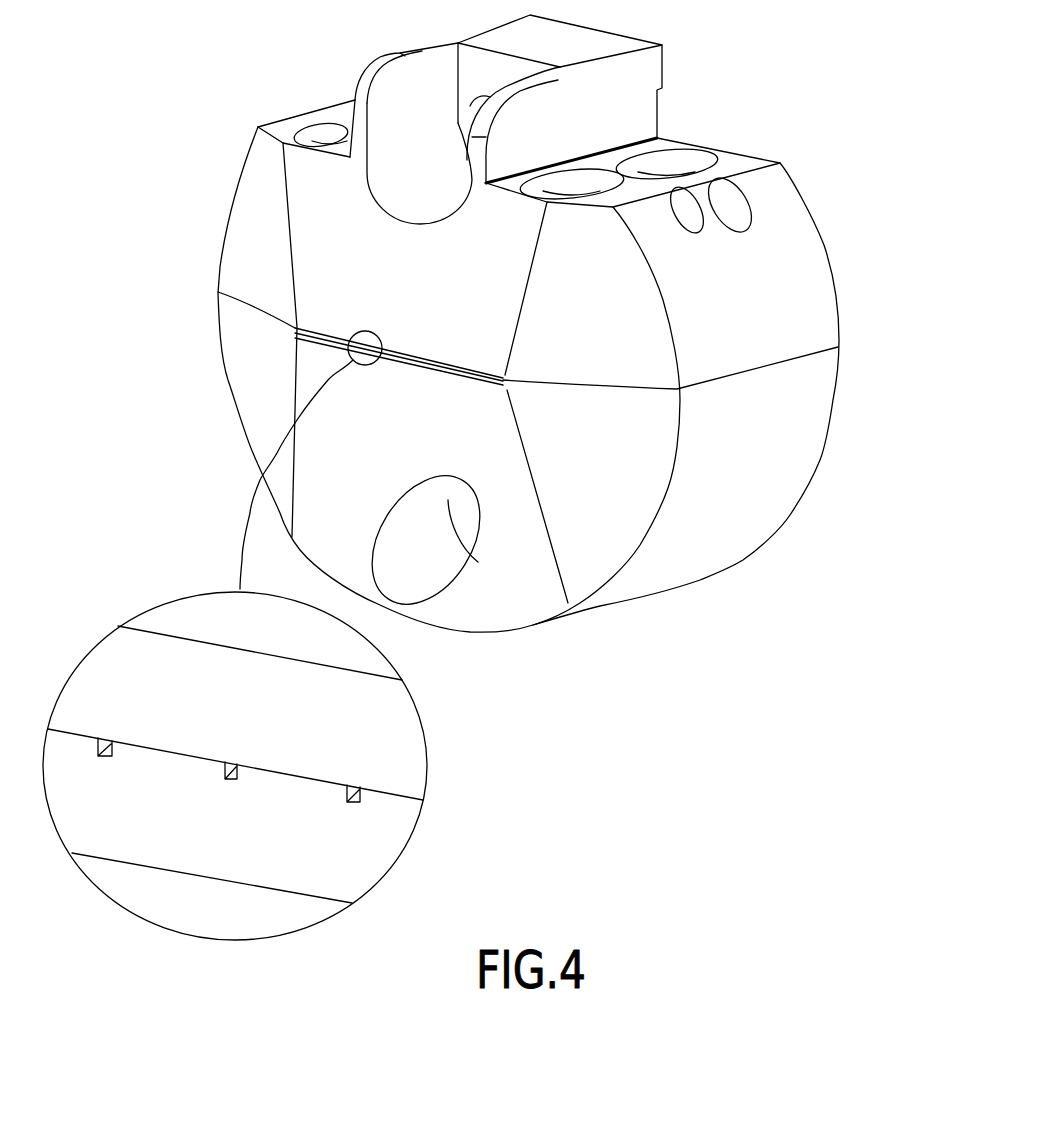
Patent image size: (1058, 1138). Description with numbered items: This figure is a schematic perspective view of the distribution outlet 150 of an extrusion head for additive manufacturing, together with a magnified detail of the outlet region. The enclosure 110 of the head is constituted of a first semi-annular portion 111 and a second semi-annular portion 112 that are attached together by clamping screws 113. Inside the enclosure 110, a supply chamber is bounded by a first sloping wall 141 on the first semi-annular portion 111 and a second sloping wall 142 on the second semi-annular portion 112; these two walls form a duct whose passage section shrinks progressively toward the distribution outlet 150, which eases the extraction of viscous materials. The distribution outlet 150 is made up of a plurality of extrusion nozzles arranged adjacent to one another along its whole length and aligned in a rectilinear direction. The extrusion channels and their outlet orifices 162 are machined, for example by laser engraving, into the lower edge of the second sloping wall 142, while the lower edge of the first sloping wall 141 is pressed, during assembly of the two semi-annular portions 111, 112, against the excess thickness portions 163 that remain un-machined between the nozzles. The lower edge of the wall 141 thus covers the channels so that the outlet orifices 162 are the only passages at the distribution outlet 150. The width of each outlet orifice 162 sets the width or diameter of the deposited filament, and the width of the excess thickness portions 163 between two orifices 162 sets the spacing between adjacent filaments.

The enclosure 110 is at (898, 300).
The first semi-annular portion 111 is at (797, 303).
The second semi-annular portion 112 is at (803, 423).
The clamping screws 113 is at (337, 143).
The first sloping wall 141 is at (395, 800).
The second sloping wall 142 is at (385, 790).
The distribution outlet 150 is at (433, 371).
The outlet orifice 162 is at (100, 745).
The excess thickness portions 163 is at (142, 755).